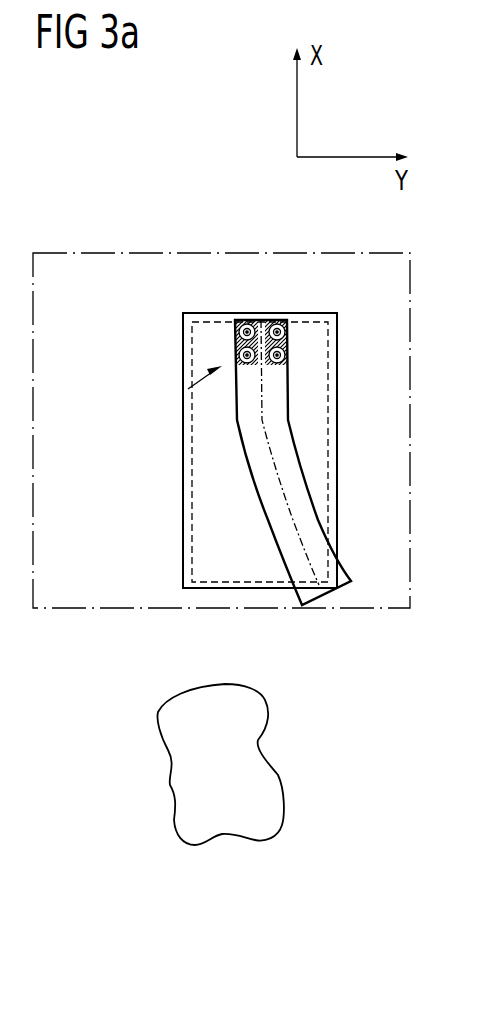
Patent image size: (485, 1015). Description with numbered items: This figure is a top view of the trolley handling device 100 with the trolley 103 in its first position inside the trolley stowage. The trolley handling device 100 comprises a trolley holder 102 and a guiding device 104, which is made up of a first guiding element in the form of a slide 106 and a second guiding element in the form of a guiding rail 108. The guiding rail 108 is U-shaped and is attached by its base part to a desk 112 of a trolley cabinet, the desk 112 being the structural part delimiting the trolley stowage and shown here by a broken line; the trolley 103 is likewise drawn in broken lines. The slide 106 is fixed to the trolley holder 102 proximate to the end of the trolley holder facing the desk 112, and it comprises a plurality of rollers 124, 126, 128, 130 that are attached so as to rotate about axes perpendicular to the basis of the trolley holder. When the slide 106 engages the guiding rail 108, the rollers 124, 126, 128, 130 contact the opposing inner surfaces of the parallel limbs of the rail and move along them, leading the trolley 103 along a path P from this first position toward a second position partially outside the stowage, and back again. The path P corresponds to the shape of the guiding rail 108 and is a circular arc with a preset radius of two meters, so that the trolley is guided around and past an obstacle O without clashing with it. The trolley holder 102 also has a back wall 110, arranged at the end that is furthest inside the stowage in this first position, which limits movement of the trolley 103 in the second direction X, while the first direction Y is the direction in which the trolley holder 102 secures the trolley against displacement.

The trolley handling device 100 is at (310, 290).
The trolley holder 102 is at (184, 472).
The trolley 103 is at (192, 428).
The guiding device 104 is at (188, 389).
The slide 106 is at (255, 368).
The guiding rail 108 is at (292, 482).
The back wall 110 is at (235, 322).
The desk 112 is at (114, 266).
The roller 124 is at (239, 331).
The roller 126 is at (286, 330).
The roller 128 is at (240, 355).
The roller 130 is at (286, 358).
The path P is at (267, 435).
The obstacle O is at (200, 847).